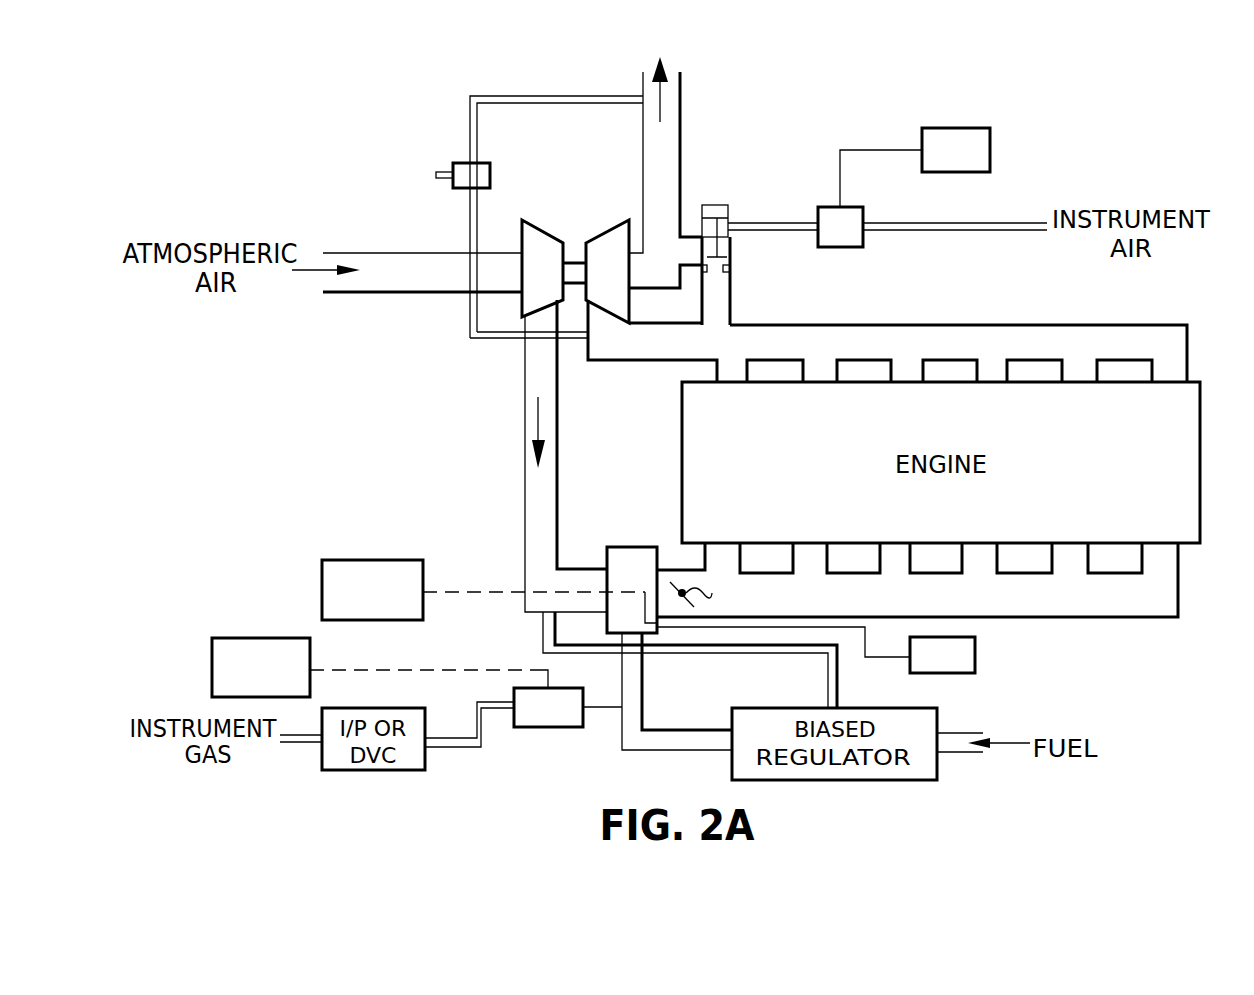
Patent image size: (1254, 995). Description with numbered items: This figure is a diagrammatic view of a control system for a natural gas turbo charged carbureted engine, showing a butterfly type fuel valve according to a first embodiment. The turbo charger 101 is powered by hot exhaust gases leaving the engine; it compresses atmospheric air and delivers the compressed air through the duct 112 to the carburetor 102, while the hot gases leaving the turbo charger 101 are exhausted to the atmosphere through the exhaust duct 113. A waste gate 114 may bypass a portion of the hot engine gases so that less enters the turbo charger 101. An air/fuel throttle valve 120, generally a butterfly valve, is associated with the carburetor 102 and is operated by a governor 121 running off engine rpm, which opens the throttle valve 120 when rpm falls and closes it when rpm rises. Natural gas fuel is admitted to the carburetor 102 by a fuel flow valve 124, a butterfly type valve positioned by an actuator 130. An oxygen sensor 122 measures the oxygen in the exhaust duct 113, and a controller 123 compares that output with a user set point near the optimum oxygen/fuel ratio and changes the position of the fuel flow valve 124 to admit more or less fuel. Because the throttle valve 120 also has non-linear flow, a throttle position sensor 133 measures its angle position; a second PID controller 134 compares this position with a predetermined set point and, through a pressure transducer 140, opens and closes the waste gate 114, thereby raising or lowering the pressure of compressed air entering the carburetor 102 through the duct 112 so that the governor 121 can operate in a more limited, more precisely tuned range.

The turbo charger 101 is at (590, 212).
The carburetor 102 is at (637, 547).
The duct 112 is at (560, 415).
The exhaust duct 113 is at (687, 103).
The waste gate 114 is at (740, 209).
The air/fuel throttle valve 120 is at (711, 594).
The governor 121 is at (367, 560).
The oxygen sensor 122 is at (468, 163).
The controller 123 is at (255, 638).
The fuel flow valve 124 is at (632, 700).
The actuator 130 is at (557, 727).
The throttle position sensor 133 is at (965, 673).
The second PID controller 134 is at (962, 128).
The pressure transducer 140 is at (842, 247).